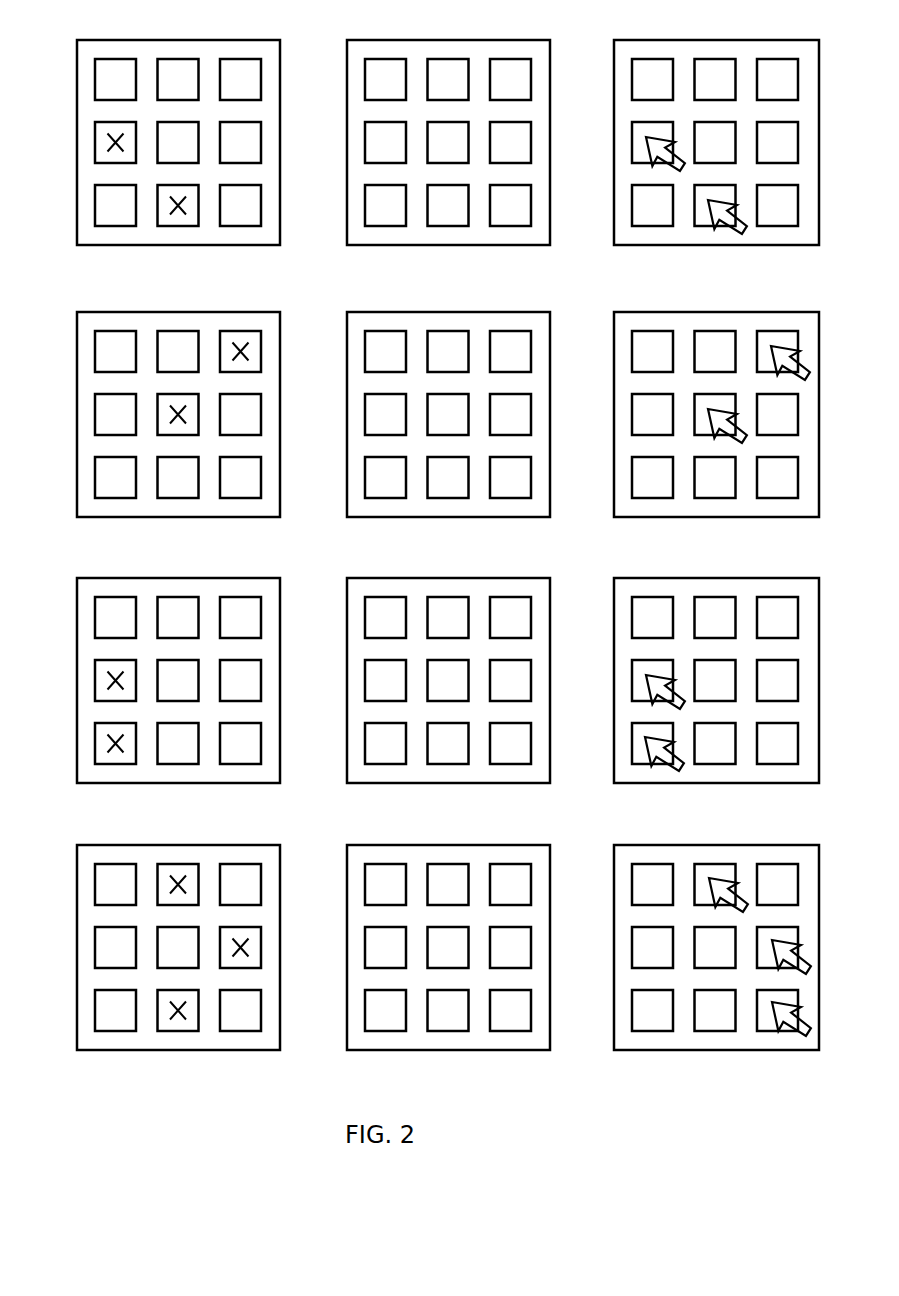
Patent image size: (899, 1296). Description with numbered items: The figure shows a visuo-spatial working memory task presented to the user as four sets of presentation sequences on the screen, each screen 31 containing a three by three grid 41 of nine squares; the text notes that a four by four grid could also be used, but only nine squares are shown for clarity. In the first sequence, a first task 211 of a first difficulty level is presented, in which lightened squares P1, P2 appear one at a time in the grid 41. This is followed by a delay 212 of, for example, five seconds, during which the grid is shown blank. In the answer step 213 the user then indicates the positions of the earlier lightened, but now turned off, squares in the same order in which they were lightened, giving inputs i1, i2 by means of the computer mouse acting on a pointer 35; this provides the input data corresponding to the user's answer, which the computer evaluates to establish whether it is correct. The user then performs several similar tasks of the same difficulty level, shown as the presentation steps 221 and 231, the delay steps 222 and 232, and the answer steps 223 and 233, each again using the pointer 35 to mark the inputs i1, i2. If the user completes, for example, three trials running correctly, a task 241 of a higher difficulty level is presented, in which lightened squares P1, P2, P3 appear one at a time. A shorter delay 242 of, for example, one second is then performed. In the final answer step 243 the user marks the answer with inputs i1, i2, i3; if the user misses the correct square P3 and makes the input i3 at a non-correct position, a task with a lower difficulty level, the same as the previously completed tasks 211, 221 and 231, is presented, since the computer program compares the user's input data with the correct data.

The display screen showing grid of cells 31 is at (263, 43).
The three by three grid 41 is at (248, 260).
The pointer 35 is at (637, 181).
The first task presentation step 211 is at (77, 183).
The delay step 212 is at (347, 185).
The answer input step 213 is at (614, 140).
The similar task presentation step 221 is at (77, 445).
The similar delay step 222 is at (347, 447).
The similar answer input step 223 is at (614, 500).
The similar task presentation step 231 is at (77, 698).
The similar delay step 232 is at (347, 700).
The similar answer input step 233 is at (614, 740).
The higher difficulty task presentation step 241 is at (77, 957).
The shorter delay step 242 is at (347, 950).
The higher difficulty answer input step 243 is at (614, 948).
The lightened square P1 is at (99, 137).
The lightened square P2 is at (183, 225).
The lightened square P3 is at (178, 1027).
The user input position i1 is at (655, 157).
The user input position i2 is at (719, 226).
The user input position i3 is at (803, 1025).